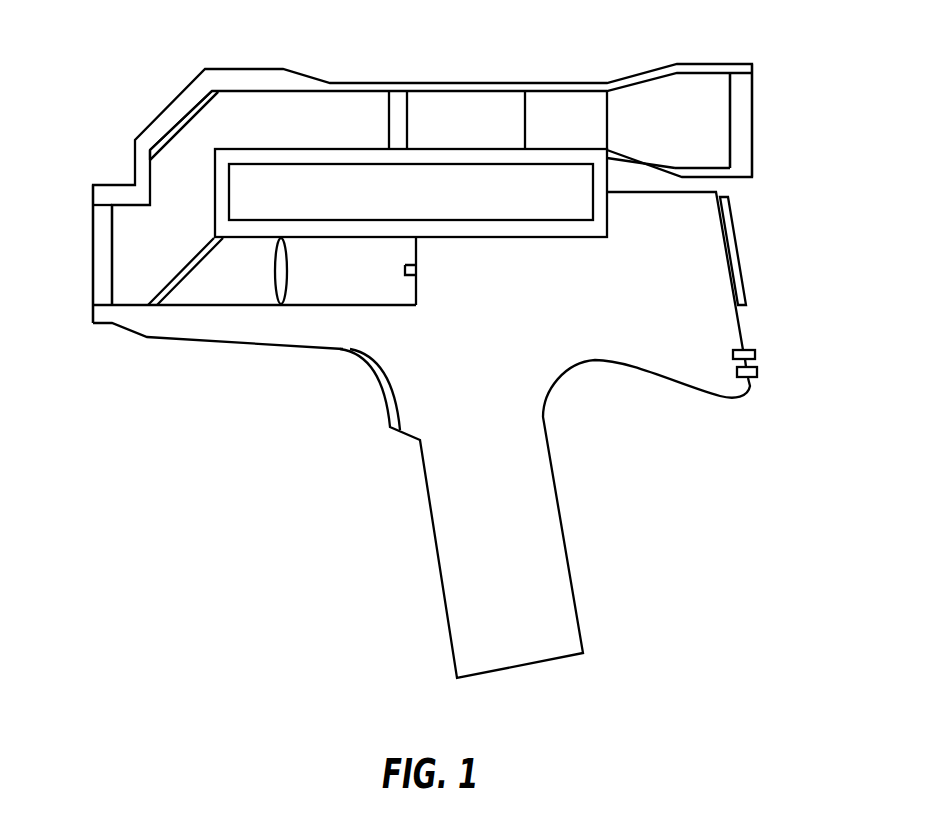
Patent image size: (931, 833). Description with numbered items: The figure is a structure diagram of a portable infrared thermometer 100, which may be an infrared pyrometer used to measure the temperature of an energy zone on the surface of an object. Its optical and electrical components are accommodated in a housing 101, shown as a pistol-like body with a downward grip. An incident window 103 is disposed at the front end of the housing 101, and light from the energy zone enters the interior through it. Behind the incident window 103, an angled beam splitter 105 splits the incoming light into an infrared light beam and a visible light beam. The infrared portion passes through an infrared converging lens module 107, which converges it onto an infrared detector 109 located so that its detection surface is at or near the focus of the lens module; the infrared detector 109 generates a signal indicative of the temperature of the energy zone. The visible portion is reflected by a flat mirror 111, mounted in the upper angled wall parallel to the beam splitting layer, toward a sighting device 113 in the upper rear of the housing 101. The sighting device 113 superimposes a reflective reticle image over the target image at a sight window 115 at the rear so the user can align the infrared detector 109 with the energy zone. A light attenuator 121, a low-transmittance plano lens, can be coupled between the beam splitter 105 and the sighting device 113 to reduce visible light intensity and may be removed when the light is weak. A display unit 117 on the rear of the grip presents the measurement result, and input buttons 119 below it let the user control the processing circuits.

The infrared thermometer 100 is at (167, 54).
The housing 101 is at (588, 354).
The incident window 103 is at (104, 273).
The beam splitter 105 is at (177, 290).
The infrared converging lens module 107 is at (280, 289).
The infrared detector 109 is at (410, 279).
The flat mirror 111 is at (174, 132).
The sighting device 113 is at (565, 100).
The sight window 115 is at (745, 93).
The display unit 117 is at (733, 234).
The input buttons 119 is at (753, 372).
The light attenuator 121 is at (396, 95).